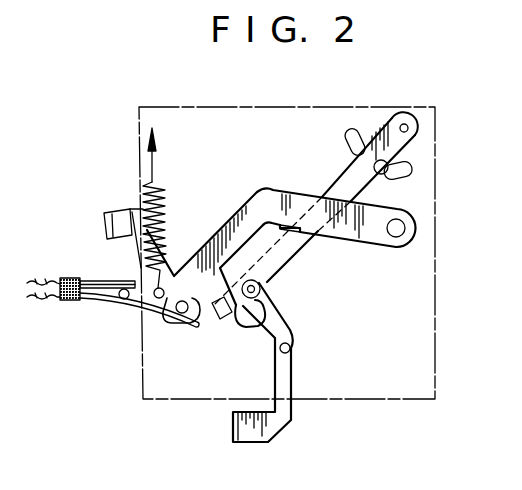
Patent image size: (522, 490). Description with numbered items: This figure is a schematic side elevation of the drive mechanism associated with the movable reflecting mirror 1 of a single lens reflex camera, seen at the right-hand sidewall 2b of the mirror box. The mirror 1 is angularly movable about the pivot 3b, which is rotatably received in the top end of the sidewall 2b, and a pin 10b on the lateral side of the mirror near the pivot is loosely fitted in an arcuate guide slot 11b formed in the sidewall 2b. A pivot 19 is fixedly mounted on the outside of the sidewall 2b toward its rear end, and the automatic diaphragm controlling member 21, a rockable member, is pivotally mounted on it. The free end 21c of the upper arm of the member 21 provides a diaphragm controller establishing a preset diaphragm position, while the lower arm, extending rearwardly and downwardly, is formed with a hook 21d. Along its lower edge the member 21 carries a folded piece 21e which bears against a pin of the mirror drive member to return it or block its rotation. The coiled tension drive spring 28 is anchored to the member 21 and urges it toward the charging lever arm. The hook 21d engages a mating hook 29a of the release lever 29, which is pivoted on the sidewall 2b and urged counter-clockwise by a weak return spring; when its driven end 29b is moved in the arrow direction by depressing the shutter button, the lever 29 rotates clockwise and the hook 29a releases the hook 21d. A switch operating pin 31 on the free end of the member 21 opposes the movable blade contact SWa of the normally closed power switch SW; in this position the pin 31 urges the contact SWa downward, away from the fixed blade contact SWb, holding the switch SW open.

The movable reflecting mirror 1 is at (338, 188).
The right-hand sidewall 2b is at (435, 303).
The pivot 3b is at (412, 130).
The pin 10b is at (386, 175).
The arcuate guide slot 11b is at (346, 145).
The pivot 19 is at (394, 236).
The automatic diaphragm controlling member 21 is at (231, 227).
The free end of the upper arm 21c is at (113, 218).
The hook 21d is at (245, 322).
The folded piece 21e is at (293, 236).
The drive spring 28 is at (160, 214).
The release lever 29 is at (280, 370).
The hook 29a is at (262, 290).
The driven end 29b is at (243, 433).
The switch operating pin 31 is at (165, 320).
The power switch SW is at (64, 278).
The movable blade contact SWa is at (116, 298).
The fixed blade contact SWb is at (114, 281).